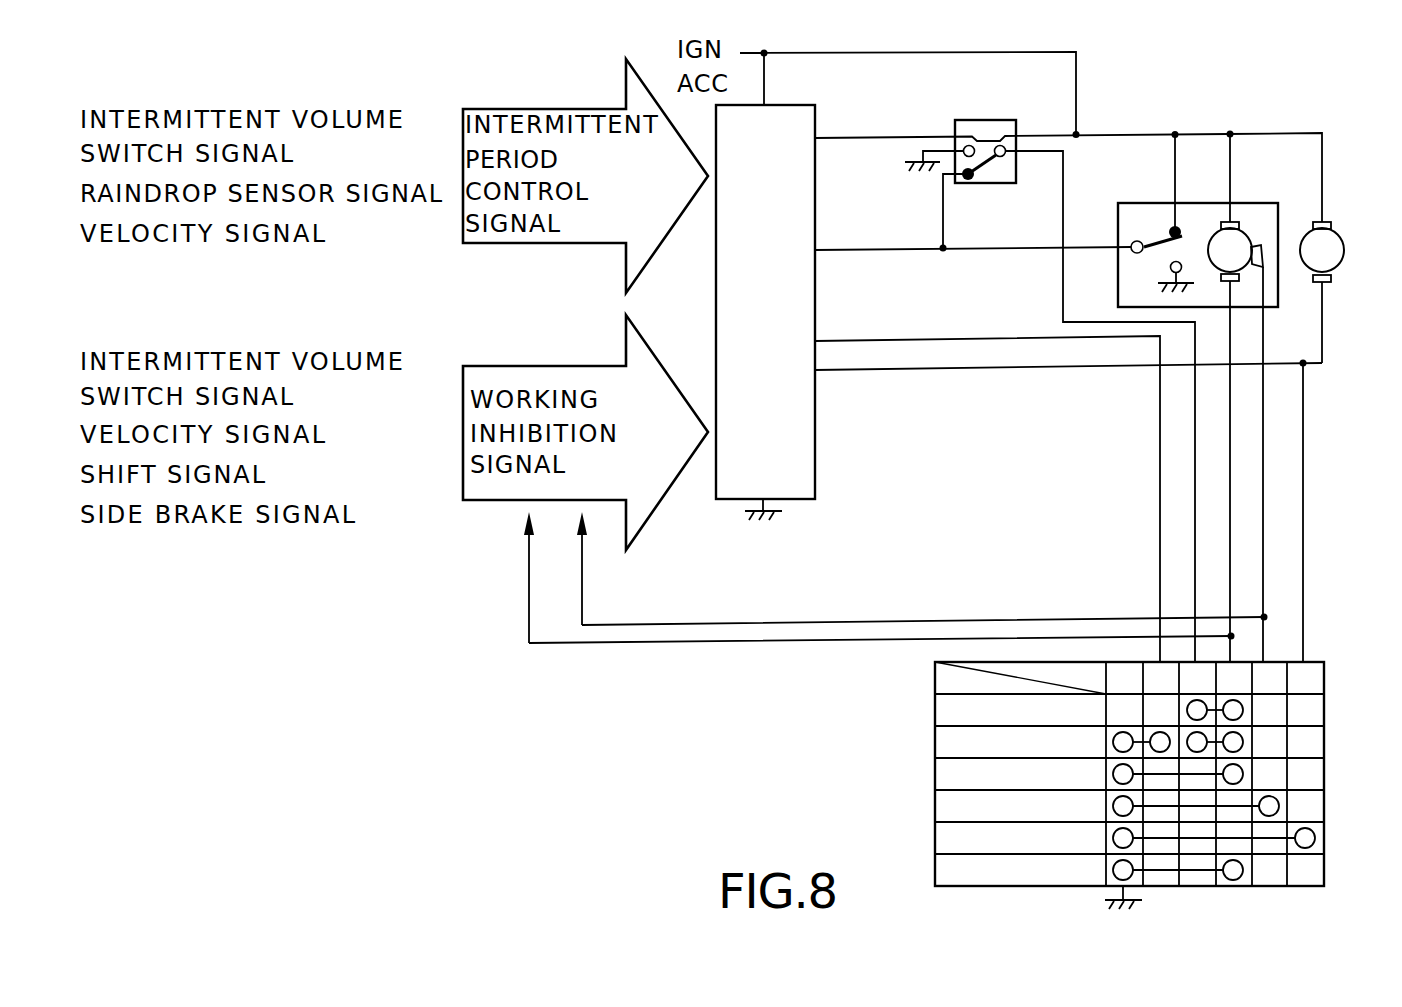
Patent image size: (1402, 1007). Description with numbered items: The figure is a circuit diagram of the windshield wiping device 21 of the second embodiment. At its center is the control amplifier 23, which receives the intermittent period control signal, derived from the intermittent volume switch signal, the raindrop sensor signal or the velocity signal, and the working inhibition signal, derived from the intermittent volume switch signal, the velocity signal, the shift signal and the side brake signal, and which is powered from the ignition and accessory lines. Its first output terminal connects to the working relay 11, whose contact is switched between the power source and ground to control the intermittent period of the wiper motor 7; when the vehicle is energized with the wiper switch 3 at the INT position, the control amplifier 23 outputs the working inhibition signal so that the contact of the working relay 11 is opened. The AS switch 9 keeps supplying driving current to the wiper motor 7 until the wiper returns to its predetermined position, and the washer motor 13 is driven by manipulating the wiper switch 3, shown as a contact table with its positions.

The wiper switch 3 is at (935, 680).
The wiper motor 7 is at (1210, 234).
The AS (auto stop) switch 9 is at (1140, 252).
The working relay 11 is at (1008, 120).
The washer motor 13 is at (1338, 270).
The wiping device 21 is at (1281, 112).
The control amplifier 23 is at (797, 105).